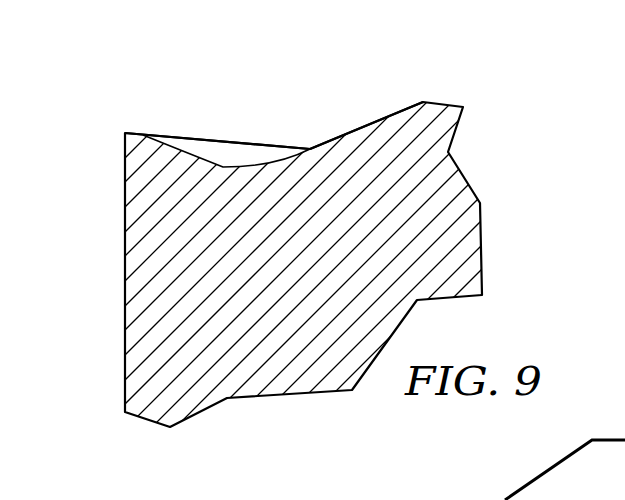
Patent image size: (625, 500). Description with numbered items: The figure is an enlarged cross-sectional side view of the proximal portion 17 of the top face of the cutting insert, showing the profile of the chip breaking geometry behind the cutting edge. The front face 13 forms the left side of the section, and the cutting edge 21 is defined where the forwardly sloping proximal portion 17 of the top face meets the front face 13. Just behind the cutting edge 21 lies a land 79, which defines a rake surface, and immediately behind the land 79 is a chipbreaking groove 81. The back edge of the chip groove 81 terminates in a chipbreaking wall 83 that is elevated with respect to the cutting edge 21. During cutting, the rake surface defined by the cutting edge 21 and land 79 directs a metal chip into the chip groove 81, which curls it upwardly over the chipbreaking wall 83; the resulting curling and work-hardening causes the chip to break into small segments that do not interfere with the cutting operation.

The front face 13 is at (125, 270).
The proximal portion 17 is at (305, 72).
The cutting edge 21 is at (127, 133).
The land 79 is at (141, 134).
The chipbreaking groove 81 is at (213, 165).
The chipbreaking wall 83 is at (378, 117).